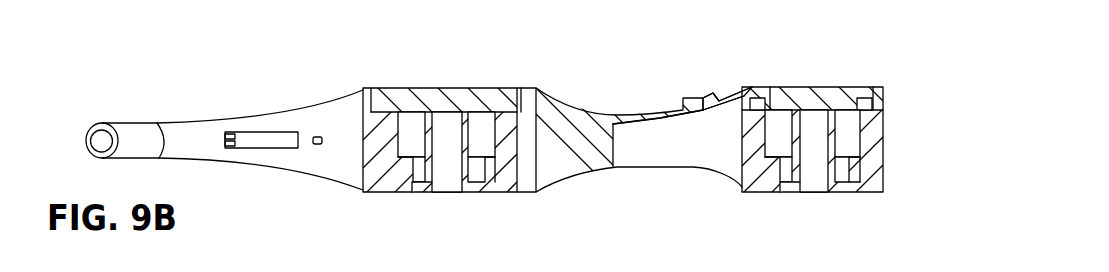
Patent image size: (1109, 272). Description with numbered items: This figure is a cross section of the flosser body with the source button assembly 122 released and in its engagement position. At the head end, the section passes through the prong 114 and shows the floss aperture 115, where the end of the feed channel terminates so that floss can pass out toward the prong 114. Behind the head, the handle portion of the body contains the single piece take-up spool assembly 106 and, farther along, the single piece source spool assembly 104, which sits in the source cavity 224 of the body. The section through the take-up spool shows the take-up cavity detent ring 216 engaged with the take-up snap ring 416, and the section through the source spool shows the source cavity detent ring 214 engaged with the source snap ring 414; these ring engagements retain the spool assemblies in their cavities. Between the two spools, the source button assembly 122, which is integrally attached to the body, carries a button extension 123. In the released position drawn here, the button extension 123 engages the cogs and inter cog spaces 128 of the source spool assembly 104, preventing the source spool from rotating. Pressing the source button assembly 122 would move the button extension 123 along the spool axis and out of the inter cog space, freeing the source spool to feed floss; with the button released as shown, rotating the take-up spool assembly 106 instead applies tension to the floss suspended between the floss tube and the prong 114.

The single piece source spool assembly 104 is at (851, 135).
The single piece take-up spool assembly 106 is at (420, 142).
The prong 114 is at (252, 150).
The floss aperture 115 is at (318, 146).
The source button assembly 122 is at (703, 97).
The button extension 123 is at (746, 110).
The cogs and inter cog spaces 128 is at (760, 77).
The source cavity detent ring 214 is at (834, 173).
The take-up cavity detent ring 216 is at (432, 190).
The source cavity 224 is at (870, 133).
The source snap ring 414 is at (848, 178).
The take-up snap ring 416 is at (408, 188).